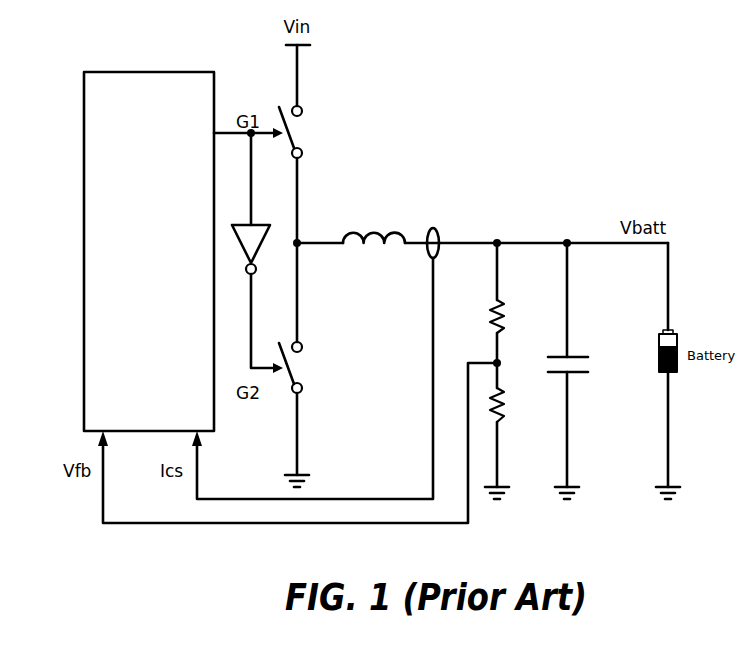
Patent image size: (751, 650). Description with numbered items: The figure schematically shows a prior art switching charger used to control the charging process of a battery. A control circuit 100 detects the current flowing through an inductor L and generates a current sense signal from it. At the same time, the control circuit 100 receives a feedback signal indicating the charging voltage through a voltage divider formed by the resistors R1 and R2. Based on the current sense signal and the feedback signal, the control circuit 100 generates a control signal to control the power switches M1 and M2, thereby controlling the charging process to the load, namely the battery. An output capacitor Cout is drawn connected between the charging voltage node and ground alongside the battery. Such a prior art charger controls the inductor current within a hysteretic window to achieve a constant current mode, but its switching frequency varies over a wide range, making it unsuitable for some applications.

The control circuit 100 is at (149, 251).
The power switch M1 is at (308, 132).
The power switch M2 is at (308, 367).
The inductor L is at (374, 227).
The resistor R1 is at (515, 316).
The resistor R2 is at (515, 405).
The output capacitor Cout is at (597, 365).